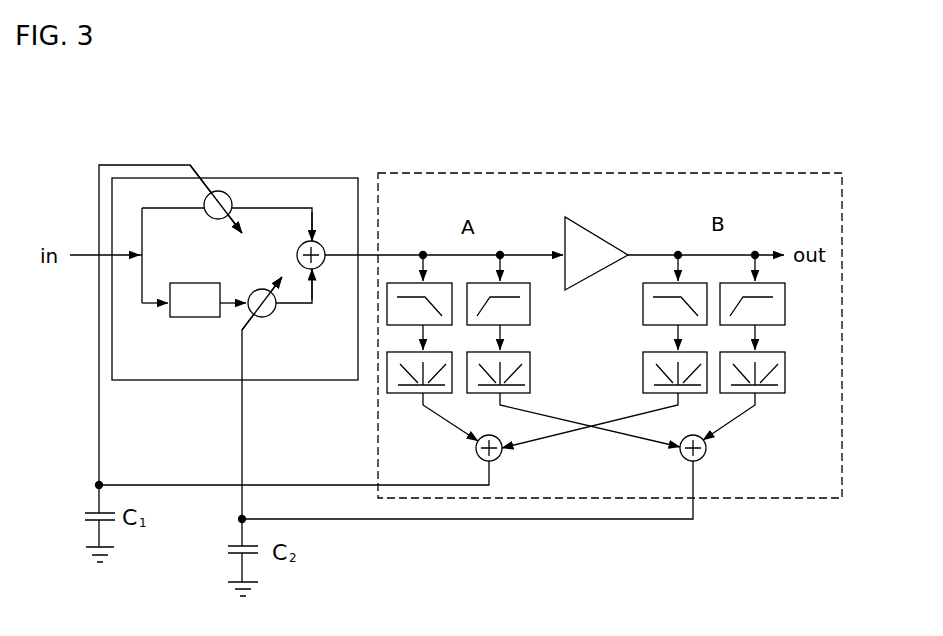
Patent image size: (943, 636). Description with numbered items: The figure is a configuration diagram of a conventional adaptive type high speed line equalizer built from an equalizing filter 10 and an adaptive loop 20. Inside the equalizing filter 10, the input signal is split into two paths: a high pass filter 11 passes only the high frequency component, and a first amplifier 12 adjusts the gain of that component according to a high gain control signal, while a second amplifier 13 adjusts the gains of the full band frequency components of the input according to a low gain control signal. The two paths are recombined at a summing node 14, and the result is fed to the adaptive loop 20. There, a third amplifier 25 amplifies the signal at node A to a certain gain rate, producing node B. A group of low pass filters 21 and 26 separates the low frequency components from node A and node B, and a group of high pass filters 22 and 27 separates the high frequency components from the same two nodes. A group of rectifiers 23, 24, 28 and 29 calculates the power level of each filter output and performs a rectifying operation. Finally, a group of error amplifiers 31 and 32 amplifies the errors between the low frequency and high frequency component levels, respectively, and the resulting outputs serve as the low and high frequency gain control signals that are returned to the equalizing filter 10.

The equalizing filter 10 is at (283, 178).
The high pass filter 11 is at (195, 317).
The first amplifier 12 is at (272, 313).
The second amplifier 13 is at (222, 192).
The adder 14 is at (320, 245).
The adaptive loop 20 is at (620, 172).
The low pass filter 21 is at (397, 283).
The high pass filter 22 is at (523, 283).
The rectifier 23 is at (397, 393).
The rectifier 24 is at (530, 355).
The third amplifier 25 is at (597, 232).
The low pass filter 26 is at (643, 312).
The high pass filter 27 is at (785, 300).
The rectifier 28 is at (643, 372).
The rectifier 29 is at (785, 372).
The error amplifier 31 is at (500, 458).
The error amplifier 32 is at (706, 450).